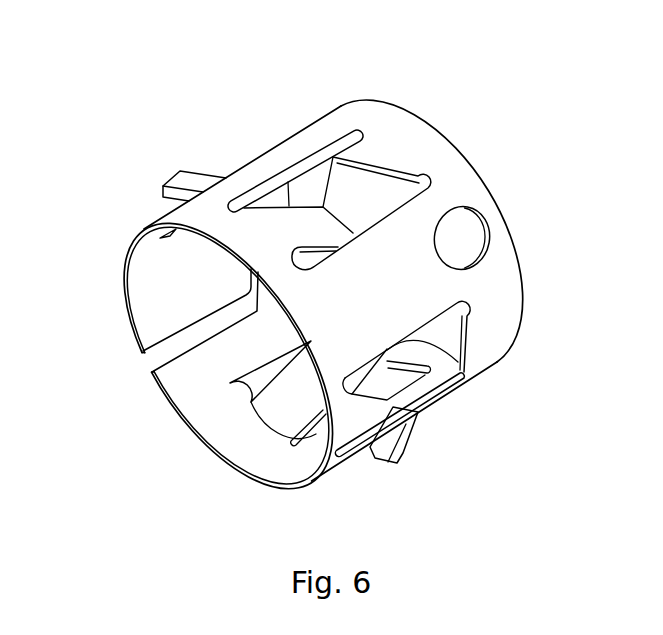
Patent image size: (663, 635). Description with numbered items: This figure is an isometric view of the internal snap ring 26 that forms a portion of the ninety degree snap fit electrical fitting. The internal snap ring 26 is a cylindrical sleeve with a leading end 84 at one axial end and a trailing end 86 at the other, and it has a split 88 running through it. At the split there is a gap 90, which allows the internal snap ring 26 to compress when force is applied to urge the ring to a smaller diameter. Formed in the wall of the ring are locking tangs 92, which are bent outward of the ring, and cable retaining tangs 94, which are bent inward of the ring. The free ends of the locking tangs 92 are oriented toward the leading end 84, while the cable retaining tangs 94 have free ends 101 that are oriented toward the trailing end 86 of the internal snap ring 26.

The internal snap ring 26 is at (219, 103).
The leading end 84 is at (469, 167).
The trailing end 86 is at (214, 459).
The split 88 is at (185, 330).
The gap 90 is at (147, 366).
The locking tangs 92 is at (413, 437).
The cable retaining tangs 94 is at (298, 228).
The free ends 101 is at (347, 229).